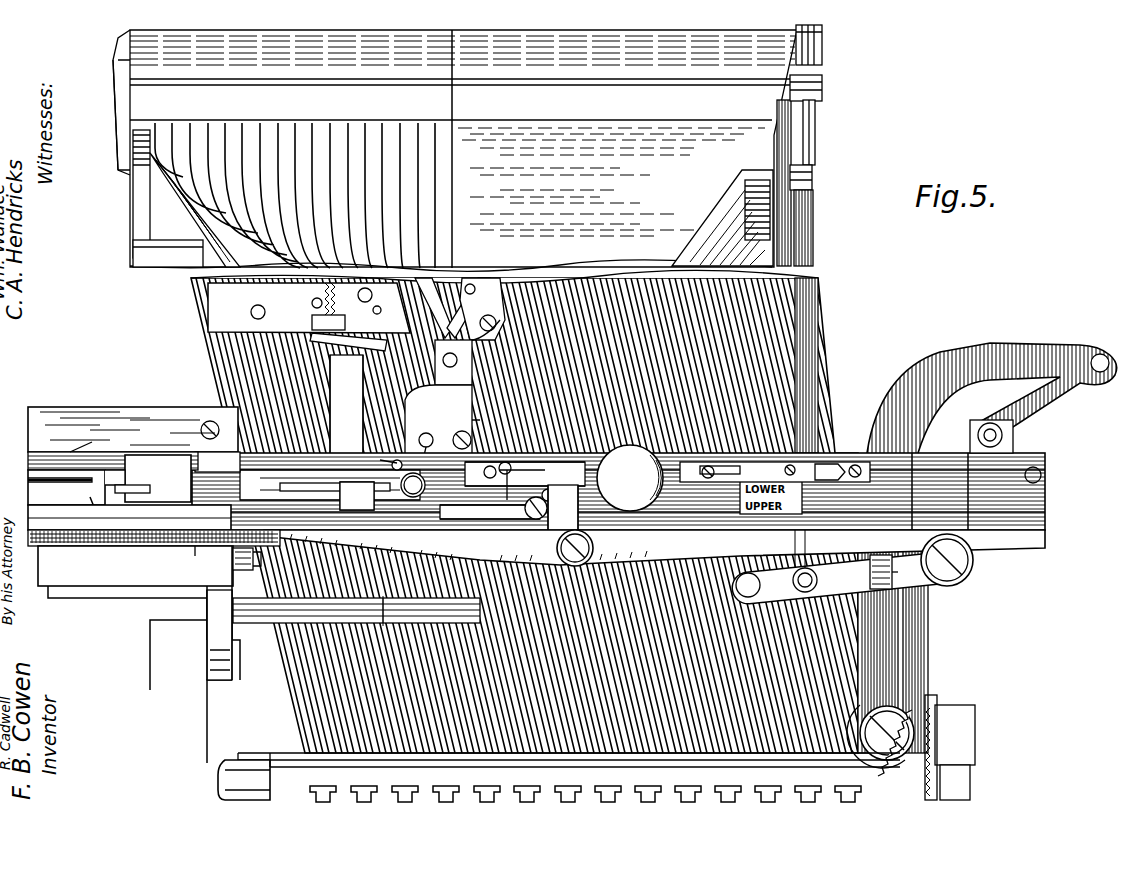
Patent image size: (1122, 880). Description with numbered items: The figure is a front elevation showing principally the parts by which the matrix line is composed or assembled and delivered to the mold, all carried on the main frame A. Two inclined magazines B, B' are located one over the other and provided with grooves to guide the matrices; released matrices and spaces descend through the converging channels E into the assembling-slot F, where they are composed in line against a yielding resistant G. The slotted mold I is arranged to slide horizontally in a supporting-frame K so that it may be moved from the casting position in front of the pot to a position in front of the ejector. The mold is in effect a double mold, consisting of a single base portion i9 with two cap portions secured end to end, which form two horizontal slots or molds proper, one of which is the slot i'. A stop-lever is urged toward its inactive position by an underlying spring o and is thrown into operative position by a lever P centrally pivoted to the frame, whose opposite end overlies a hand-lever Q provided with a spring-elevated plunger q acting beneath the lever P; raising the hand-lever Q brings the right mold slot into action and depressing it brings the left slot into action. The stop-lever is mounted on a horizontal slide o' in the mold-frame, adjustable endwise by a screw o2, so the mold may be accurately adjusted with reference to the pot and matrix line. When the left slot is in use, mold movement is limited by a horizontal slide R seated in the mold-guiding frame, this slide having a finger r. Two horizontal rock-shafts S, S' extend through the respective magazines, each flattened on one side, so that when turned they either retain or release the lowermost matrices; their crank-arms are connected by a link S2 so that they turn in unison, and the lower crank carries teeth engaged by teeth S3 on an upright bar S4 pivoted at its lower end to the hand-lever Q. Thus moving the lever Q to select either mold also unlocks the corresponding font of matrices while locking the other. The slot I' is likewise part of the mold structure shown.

The inclined magazine B is at (431, 147).
The inclined magazine B' is at (98, 106).
The converging channels E is at (295, 195).
The rock-shaft S is at (819, 46).
The link S2 is at (822, 88).
The rock-shaft S' is at (826, 132).
The teeth S3 is at (812, 177).
The upright bar S4 is at (813, 215).
The supporting-frame K is at (133, 429).
The mold slot I' is at (210, 452).
The slotted mold I is at (66, 487).
The mold slot i' is at (60, 492).
The carriage bar pin i'' is at (82, 448).
The horizontal slide R is at (148, 478).
The finger r is at (128, 490).
The base portion i9 is at (106, 511).
The spring o is at (135, 566).
The horizontal slide o' is at (189, 562).
The screw o2 is at (233, 560).
The assembling-slot F is at (330, 460).
The yielding resistant G is at (357, 496).
The lever P is at (655, 547).
The hand-lever Q is at (843, 563).
The spring-elevated plunger q is at (892, 572).
The main frame A is at (240, 724).